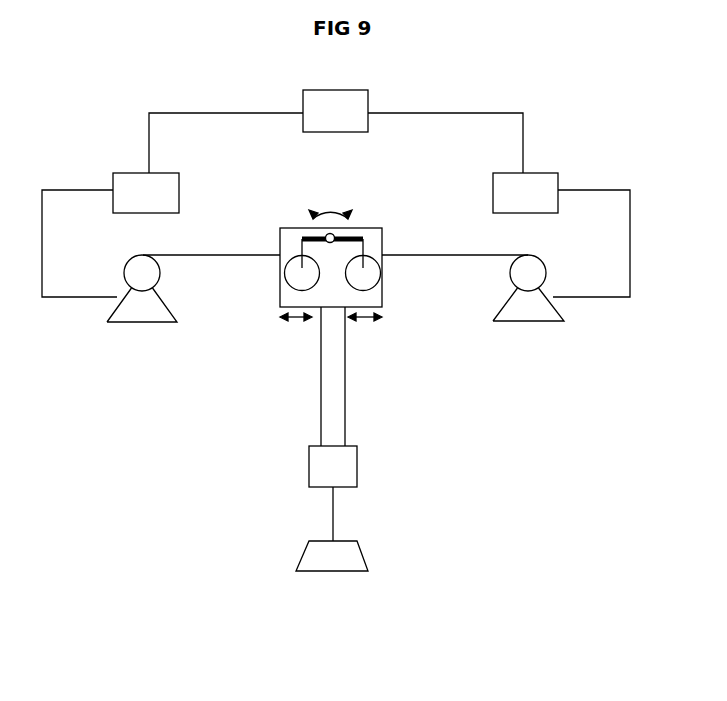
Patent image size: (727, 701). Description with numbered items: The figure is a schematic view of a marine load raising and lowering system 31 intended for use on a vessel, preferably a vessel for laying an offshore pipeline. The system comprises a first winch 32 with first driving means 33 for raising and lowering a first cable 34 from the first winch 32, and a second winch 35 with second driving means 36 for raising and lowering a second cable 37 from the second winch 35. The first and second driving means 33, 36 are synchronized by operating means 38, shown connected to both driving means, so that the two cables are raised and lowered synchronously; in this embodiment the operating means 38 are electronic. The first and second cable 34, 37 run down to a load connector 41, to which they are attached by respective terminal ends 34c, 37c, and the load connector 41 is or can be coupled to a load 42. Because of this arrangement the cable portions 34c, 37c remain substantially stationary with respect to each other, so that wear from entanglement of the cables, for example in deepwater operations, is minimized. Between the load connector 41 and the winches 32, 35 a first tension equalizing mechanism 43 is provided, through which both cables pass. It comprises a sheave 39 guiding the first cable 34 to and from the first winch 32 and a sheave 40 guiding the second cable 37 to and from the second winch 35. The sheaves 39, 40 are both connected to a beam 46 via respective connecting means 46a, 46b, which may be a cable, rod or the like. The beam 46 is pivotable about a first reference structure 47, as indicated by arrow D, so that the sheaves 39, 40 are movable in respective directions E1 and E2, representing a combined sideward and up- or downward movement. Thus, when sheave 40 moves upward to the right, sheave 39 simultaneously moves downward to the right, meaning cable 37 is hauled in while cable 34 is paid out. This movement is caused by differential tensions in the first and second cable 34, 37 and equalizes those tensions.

The marine load raising and lowering system 31 is at (483, 405).
The first winch 32 is at (132, 308).
The first driving means 33 is at (132, 185).
The first cable 34 is at (220, 255).
The terminal end of the first cable 34c is at (321, 417).
The second winch 35 is at (547, 308).
The second driving means 36 is at (533, 180).
The second cable 37 is at (458, 253).
The terminal end of the second cable 37c is at (345, 422).
The operating means 38 is at (350, 118).
The sheave 39 is at (292, 274).
The sheave 40 is at (370, 272).
The load connector 41 is at (343, 468).
The load 42 is at (315, 558).
The first tension equalizing mechanism 43 is at (288, 237).
The beam 46 is at (345, 235).
The connecting means 46a is at (300, 247).
The connecting means 46b is at (367, 247).
The first reference structure 47 is at (334, 233).
The arrow D is at (327, 203).
The direction E1 is at (296, 333).
The direction E2 is at (365, 333).